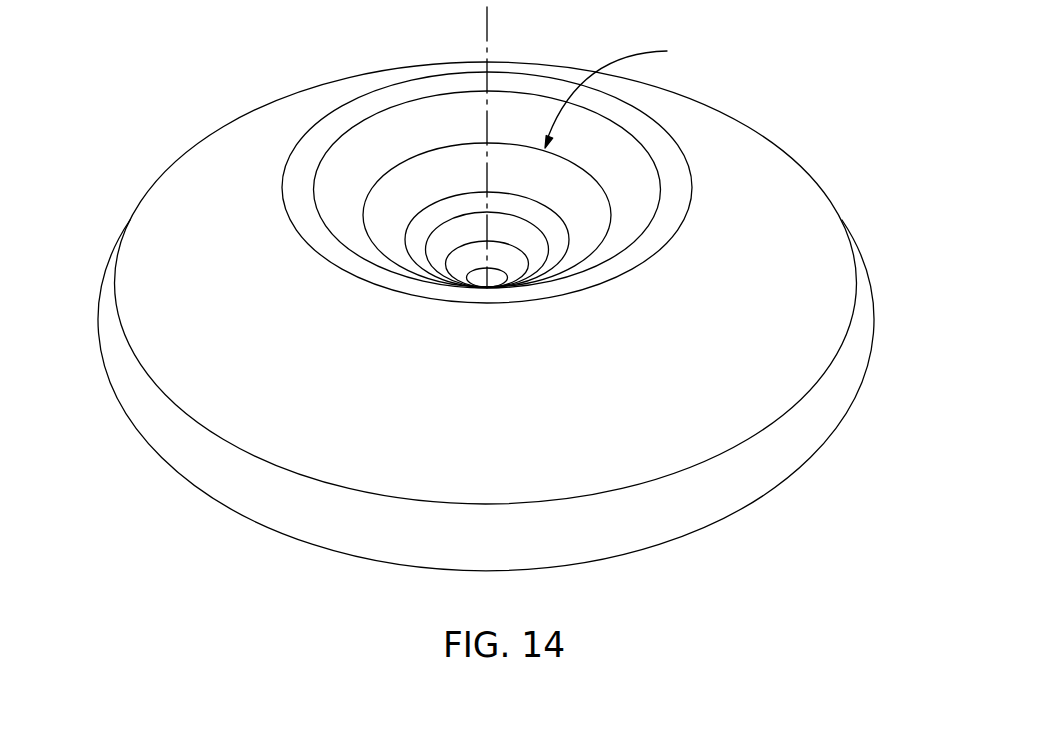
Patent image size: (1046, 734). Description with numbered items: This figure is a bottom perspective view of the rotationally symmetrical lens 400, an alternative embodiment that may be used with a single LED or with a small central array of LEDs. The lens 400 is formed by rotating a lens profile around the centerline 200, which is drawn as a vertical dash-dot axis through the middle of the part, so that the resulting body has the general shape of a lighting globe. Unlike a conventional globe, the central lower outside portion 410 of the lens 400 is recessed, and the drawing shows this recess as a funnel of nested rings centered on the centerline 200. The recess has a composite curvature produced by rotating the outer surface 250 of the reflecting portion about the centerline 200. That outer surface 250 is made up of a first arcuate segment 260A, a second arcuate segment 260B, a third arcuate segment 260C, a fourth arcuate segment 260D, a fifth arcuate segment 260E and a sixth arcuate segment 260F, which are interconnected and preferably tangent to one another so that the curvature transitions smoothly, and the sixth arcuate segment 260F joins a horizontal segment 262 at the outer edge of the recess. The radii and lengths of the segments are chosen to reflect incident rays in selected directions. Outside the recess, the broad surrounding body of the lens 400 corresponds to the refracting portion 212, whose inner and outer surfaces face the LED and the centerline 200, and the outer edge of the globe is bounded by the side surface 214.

The rotationally symmetrical lens 400 is at (510, 293).
The centerline 200 is at (487, 50).
The central lower outside portion 410 is at (626, 94).
The outer surface 250 is at (617, 147).
The horizontal segment 262 is at (637, 197).
The sixth arcuate segment 260F is at (595, 215).
The fifth arcuate segment 260E is at (560, 233).
The fourth arcuate segment 260D is at (543, 250).
The third arcuate segment 260C is at (520, 268).
The second arcuate segment 260B is at (555, 283).
The first arcuate segment 260A is at (505, 283).
The refracting portion 212 is at (742, 145).
The side wall 214 is at (867, 323).